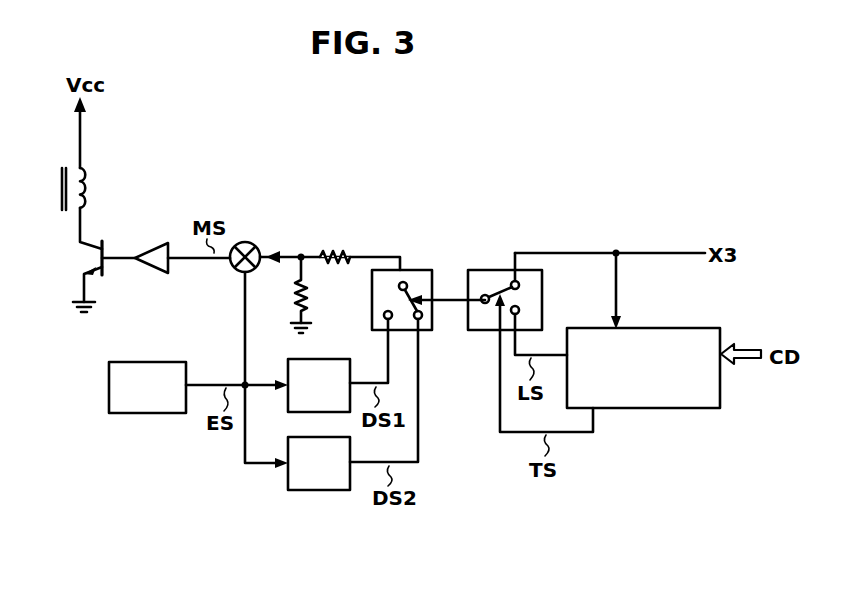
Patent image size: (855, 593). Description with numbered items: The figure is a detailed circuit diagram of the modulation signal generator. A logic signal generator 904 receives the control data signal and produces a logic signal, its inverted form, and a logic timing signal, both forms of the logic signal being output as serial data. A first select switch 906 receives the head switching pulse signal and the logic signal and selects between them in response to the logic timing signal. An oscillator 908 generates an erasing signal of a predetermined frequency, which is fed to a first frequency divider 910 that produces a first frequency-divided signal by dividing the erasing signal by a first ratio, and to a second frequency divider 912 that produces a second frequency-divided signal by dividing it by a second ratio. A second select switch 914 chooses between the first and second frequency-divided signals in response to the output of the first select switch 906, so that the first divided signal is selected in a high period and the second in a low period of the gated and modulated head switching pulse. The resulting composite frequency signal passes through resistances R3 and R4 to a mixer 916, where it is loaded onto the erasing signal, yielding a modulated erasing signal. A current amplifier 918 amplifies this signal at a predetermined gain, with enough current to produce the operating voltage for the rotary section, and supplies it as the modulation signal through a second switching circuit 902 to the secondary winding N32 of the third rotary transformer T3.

The second switching circuit 902 is at (78, 251).
The logic signal generator 904 is at (640, 410).
The first select switch 906 is at (493, 268).
The oscillator 908 is at (148, 415).
The first frequency divider 910 is at (300, 359).
The second frequency divider 912 is at (305, 493).
The second select switch 914 is at (422, 268).
The mixer 916 is at (247, 241).
The current amplifier 918 is at (161, 243).
The third rotary transformer T3 is at (43, 176).
The secondary winding N32 is at (128, 185).
The resistance R3 is at (336, 245).
The resistance R4 is at (315, 295).